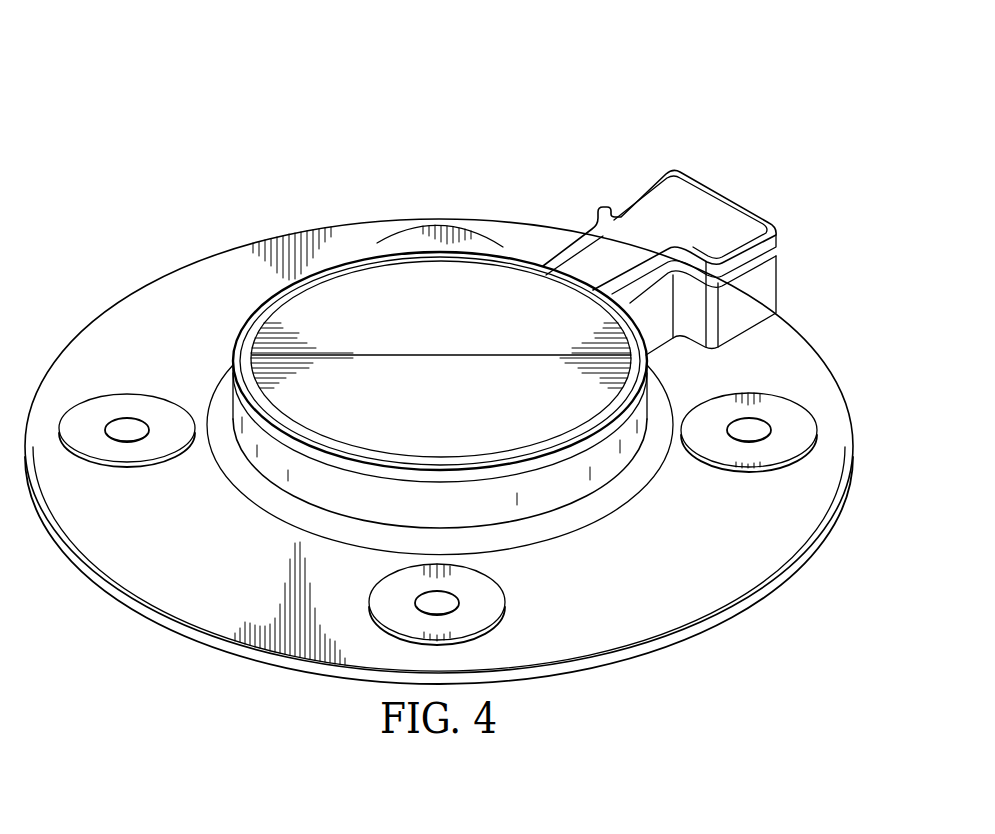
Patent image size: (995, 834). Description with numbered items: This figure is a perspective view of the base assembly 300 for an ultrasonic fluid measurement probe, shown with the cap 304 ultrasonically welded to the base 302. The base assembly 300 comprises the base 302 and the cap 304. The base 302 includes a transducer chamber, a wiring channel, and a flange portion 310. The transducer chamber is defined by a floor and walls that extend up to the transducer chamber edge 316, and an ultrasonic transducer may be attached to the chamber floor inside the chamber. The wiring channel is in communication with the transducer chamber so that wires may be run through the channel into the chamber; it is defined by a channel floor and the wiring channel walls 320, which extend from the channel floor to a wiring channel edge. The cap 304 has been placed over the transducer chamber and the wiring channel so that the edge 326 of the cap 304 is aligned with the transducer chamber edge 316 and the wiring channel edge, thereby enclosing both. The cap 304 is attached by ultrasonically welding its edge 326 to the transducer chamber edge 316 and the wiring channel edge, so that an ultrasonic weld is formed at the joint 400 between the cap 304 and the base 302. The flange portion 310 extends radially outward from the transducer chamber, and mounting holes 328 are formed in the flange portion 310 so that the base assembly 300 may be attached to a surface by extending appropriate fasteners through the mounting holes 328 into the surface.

The base assembly 300 is at (279, 88).
The base 302 is at (786, 297).
The cap 304 is at (724, 186).
The flange portion 310 is at (148, 297).
The transducer chamber edge 316 is at (345, 470).
The wiring channel walls 320 is at (760, 285).
The edge 326 is at (240, 340).
The mounting holes 328 is at (118, 435).
The joint 400 is at (790, 243).